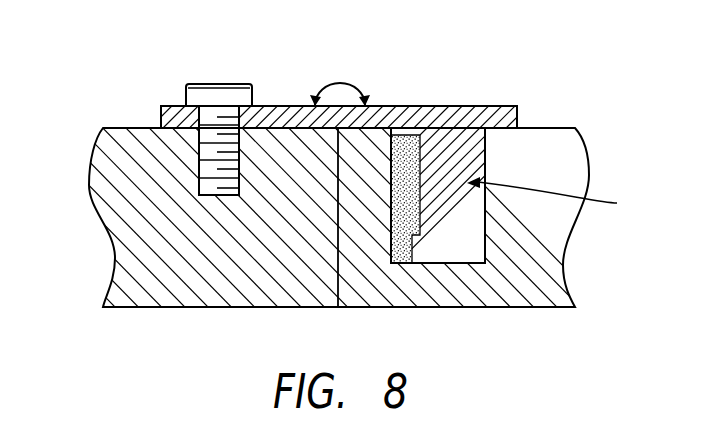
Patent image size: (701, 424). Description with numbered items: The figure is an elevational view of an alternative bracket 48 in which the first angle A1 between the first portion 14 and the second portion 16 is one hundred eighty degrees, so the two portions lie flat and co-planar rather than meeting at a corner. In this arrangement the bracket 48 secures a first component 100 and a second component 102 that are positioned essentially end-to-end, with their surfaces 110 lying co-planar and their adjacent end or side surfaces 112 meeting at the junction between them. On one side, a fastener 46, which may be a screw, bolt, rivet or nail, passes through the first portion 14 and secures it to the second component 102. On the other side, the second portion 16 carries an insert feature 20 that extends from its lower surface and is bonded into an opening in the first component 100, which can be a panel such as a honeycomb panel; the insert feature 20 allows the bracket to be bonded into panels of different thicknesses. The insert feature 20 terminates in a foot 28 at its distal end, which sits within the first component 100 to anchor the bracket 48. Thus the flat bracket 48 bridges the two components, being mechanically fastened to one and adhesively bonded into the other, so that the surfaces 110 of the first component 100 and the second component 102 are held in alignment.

The first portion 14 is at (175, 106).
The fastener 46 is at (220, 83).
The first angle A1 is at (341, 83).
The bracket 48 is at (433, 98).
The second portion 16 is at (495, 106).
The surfaces to be joined 110 is at (118, 127).
The first component 100 is at (588, 161).
The insert feature 20 is at (553, 197).
The second component 102 is at (162, 288).
The adjacent end or side surfaces 112 is at (338, 281).
The foot 28 is at (453, 248).